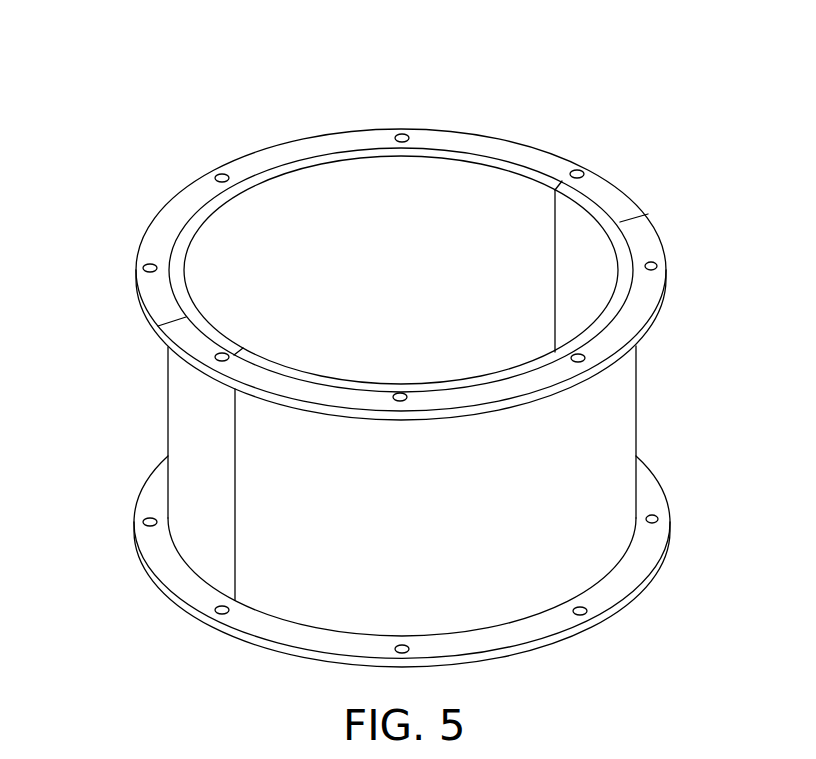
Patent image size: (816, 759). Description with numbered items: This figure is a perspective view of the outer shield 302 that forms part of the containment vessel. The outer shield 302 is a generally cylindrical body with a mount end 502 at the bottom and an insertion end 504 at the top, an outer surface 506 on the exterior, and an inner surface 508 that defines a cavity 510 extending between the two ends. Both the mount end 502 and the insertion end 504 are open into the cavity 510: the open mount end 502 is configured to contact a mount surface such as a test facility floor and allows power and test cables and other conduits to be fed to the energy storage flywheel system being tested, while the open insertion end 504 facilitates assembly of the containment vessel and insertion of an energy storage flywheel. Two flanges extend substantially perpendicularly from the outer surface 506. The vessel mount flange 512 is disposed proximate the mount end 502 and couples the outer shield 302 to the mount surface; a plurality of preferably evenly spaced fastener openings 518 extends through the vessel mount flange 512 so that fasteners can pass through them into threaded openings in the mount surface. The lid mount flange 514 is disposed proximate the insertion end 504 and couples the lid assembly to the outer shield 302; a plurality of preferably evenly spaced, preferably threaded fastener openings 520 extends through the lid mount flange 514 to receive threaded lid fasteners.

The outer shield 302 is at (156, 145).
The mount end 502 is at (600, 624).
The insertion end 504 is at (598, 206).
The outer surface 506 is at (629, 403).
The inner surface 508 is at (468, 168).
The cavity 510 is at (341, 178).
The vessel mount flange 512 is at (647, 560).
The lid mount flange 514 is at (655, 246).
The fastener openings 518 is at (221, 614).
The fastener openings 520 is at (147, 267).